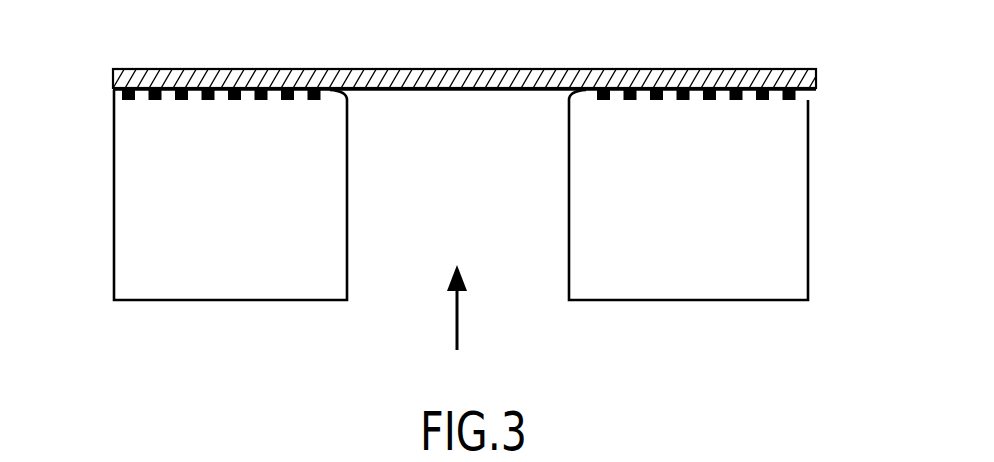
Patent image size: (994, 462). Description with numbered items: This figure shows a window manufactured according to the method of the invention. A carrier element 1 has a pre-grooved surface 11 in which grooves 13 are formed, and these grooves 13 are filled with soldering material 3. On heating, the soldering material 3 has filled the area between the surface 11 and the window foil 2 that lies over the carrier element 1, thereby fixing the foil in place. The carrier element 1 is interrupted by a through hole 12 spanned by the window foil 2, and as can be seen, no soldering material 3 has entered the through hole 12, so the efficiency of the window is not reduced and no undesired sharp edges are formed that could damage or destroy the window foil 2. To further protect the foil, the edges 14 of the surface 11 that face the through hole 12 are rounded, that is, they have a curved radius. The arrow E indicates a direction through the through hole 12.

The carrier element 1 is at (130, 222).
The window foil 2 is at (816, 84).
The soldering material 3 is at (113, 88).
The pre-grooved surface 11 is at (117, 96).
The through hole 12 is at (412, 115).
The grooves 13 is at (130, 100).
The edges 14 is at (345, 93).
The direction of electron / emission arrow E is at (455, 337).